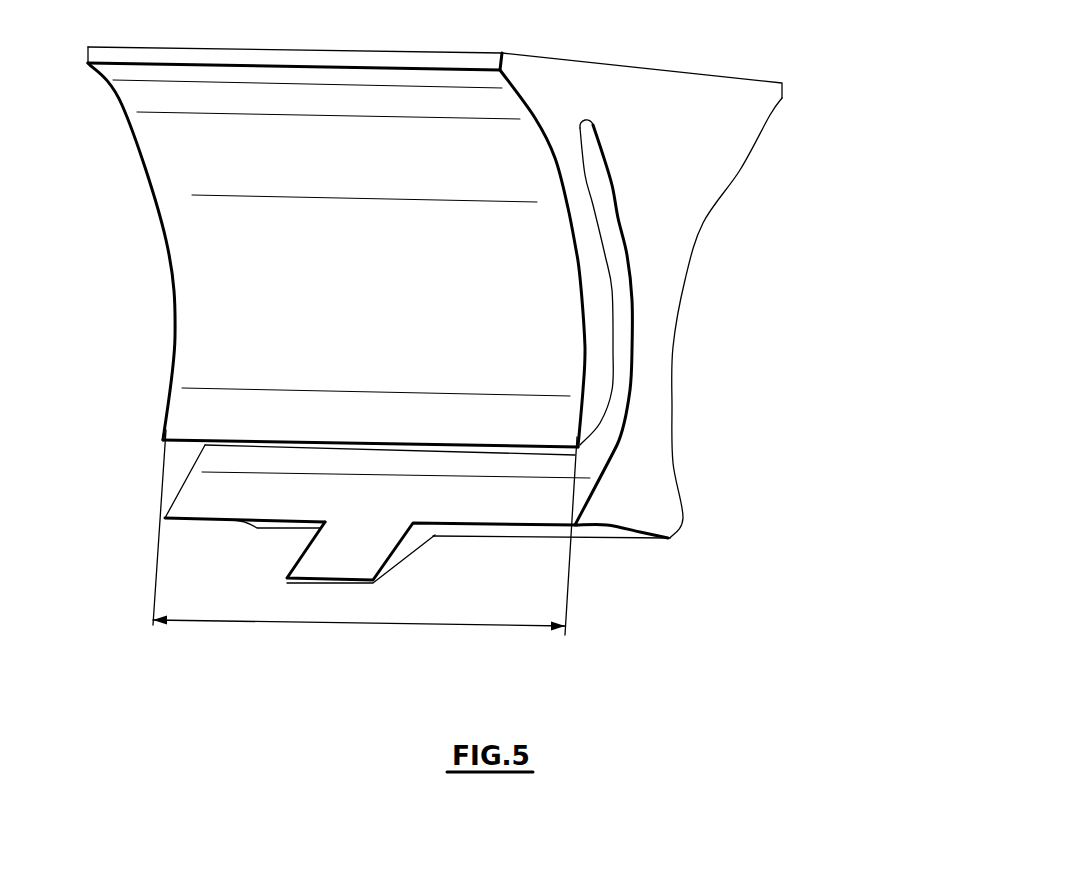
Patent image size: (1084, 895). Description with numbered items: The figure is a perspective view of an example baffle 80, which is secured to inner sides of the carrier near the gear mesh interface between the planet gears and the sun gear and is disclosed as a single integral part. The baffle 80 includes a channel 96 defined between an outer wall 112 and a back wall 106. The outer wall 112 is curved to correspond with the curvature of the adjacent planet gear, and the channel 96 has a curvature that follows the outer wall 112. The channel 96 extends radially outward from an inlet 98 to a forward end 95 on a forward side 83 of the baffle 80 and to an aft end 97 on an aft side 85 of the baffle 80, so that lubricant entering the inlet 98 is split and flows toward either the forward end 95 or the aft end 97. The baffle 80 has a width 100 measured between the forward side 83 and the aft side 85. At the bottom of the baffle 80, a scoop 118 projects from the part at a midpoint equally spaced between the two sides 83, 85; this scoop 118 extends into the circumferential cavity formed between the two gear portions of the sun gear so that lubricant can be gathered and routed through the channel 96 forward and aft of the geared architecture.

The baffle 80 is at (499, 342).
The forward side 83 is at (170, 288).
The aft side 85 is at (672, 223).
The forward end 95 is at (132, 102).
The channel 96 is at (622, 282).
The aft end 97 is at (590, 132).
The inlet 98 is at (303, 452).
The width 100 is at (443, 626).
The back wall 106 is at (613, 198).
The outer wall 112 is at (593, 387).
The scoop 118 is at (360, 550).